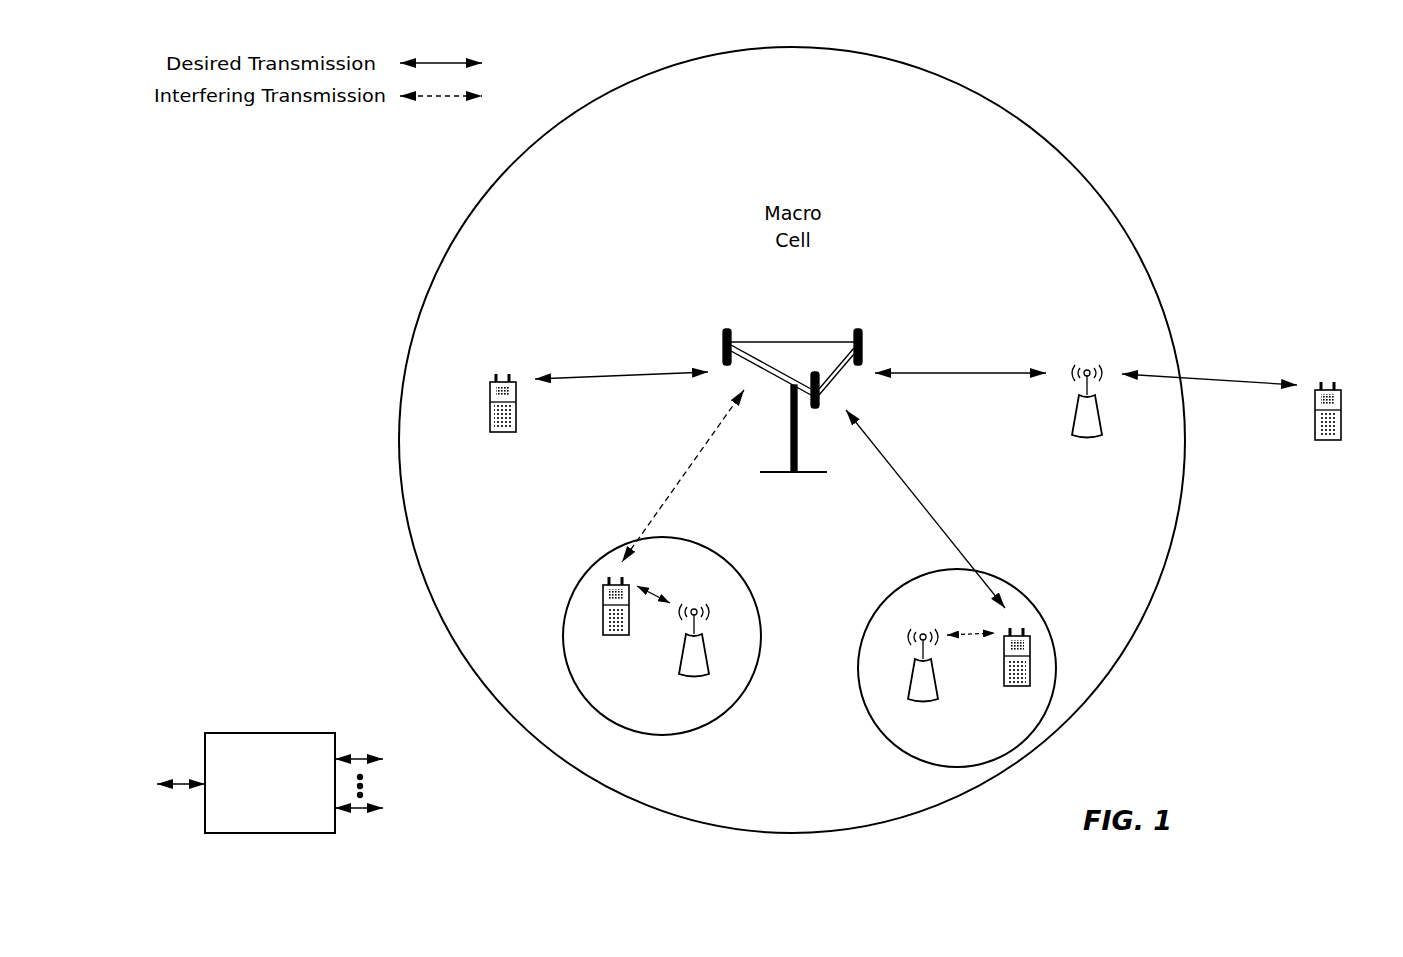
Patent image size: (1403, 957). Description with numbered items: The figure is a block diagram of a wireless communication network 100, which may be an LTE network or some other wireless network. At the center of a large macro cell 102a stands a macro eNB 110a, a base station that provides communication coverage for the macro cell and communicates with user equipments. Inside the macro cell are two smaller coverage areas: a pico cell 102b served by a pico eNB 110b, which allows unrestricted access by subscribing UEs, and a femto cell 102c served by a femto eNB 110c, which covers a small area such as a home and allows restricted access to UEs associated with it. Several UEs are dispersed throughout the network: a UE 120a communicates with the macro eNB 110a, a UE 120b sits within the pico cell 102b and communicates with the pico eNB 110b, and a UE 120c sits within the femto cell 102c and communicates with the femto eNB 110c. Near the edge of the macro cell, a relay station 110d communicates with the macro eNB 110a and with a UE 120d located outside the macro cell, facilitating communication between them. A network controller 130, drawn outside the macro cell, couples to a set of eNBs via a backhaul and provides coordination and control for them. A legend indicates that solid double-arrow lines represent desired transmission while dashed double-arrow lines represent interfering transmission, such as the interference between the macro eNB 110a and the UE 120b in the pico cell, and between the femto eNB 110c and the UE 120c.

The wireless communication network 100 is at (1264, 106).
The macro cell 102a is at (1064, 128).
The pico cell 102b is at (750, 553).
The femto cell 102c is at (881, 602).
The macro eNB 110a is at (788, 340).
The pico eNB 110b is at (708, 663).
The femto eNB 110c is at (907, 684).
The relay station 110d is at (1088, 369).
The UE 120a is at (490, 393).
The UE 120b is at (603, 627).
The UE 120c is at (1004, 679).
The UE 120d is at (1341, 400).
The network controller 130 is at (268, 733).